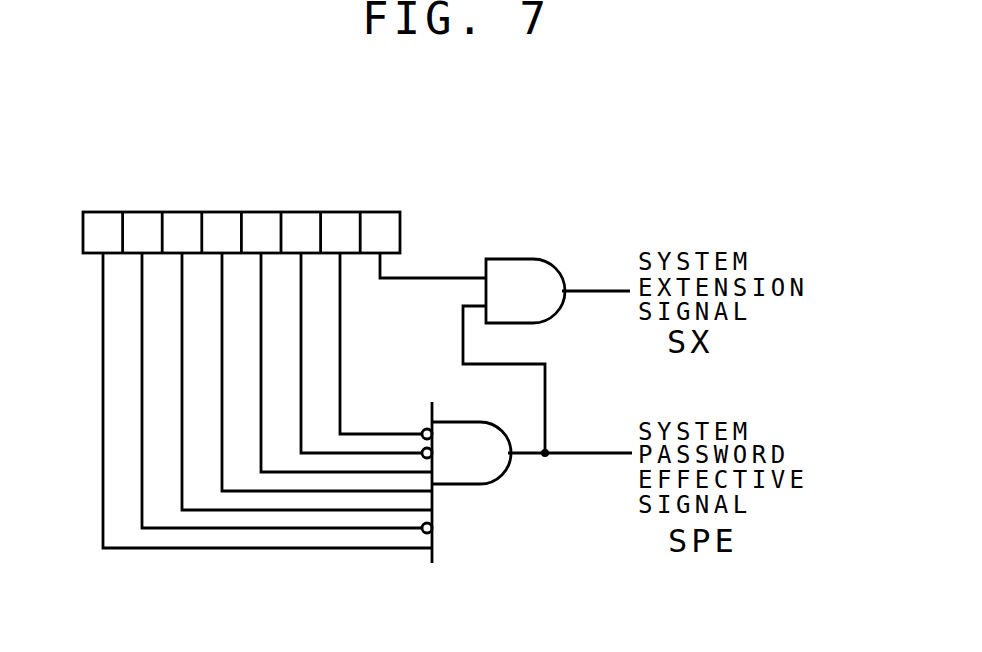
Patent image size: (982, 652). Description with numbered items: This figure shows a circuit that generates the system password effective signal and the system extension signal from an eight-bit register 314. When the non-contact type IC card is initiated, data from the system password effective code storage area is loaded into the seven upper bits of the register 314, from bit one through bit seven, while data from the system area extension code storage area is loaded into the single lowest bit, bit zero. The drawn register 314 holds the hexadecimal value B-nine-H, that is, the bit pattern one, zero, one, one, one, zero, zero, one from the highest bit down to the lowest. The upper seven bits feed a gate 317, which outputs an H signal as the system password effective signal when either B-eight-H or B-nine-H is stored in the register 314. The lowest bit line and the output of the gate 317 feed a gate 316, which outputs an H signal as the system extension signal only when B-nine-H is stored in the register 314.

The register 314 is at (232, 201).
The gate 316 is at (525, 270).
The gate 317 is at (473, 475).